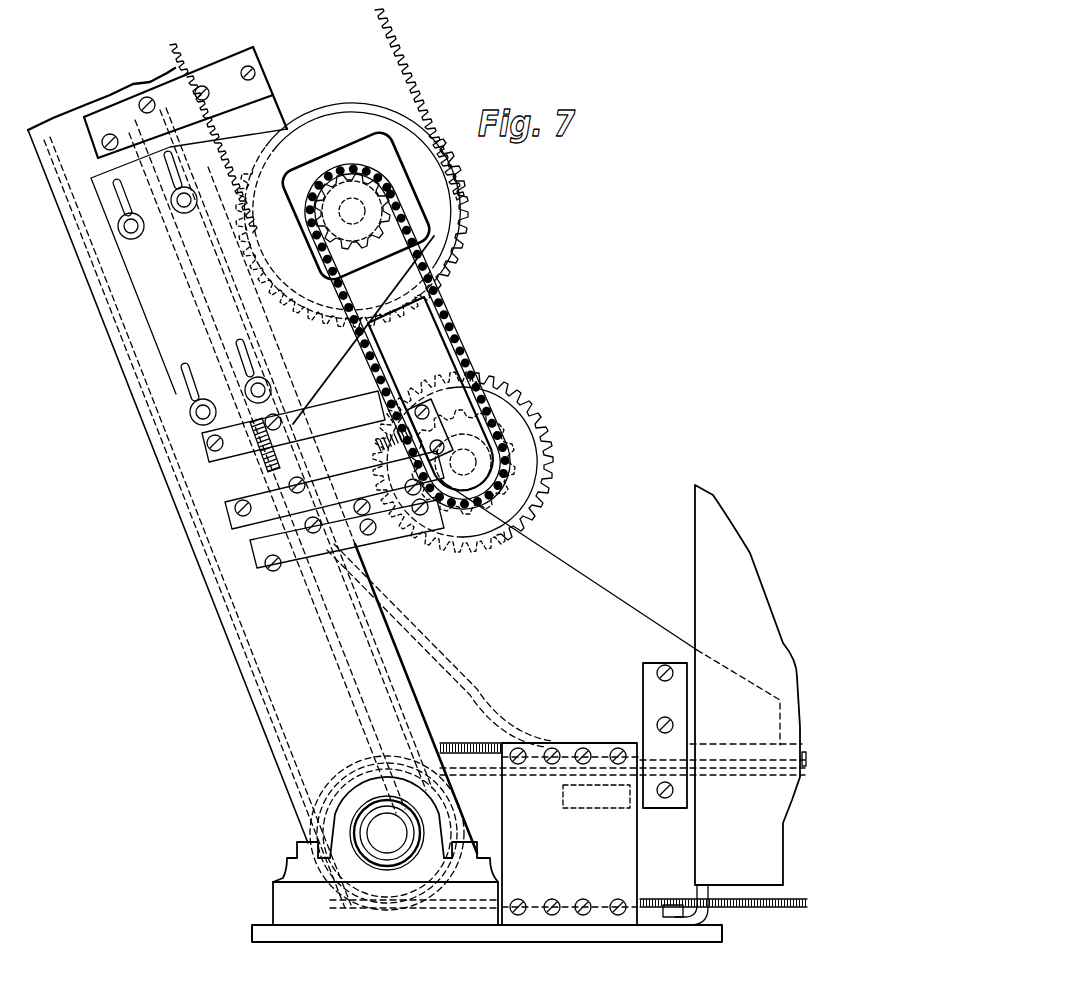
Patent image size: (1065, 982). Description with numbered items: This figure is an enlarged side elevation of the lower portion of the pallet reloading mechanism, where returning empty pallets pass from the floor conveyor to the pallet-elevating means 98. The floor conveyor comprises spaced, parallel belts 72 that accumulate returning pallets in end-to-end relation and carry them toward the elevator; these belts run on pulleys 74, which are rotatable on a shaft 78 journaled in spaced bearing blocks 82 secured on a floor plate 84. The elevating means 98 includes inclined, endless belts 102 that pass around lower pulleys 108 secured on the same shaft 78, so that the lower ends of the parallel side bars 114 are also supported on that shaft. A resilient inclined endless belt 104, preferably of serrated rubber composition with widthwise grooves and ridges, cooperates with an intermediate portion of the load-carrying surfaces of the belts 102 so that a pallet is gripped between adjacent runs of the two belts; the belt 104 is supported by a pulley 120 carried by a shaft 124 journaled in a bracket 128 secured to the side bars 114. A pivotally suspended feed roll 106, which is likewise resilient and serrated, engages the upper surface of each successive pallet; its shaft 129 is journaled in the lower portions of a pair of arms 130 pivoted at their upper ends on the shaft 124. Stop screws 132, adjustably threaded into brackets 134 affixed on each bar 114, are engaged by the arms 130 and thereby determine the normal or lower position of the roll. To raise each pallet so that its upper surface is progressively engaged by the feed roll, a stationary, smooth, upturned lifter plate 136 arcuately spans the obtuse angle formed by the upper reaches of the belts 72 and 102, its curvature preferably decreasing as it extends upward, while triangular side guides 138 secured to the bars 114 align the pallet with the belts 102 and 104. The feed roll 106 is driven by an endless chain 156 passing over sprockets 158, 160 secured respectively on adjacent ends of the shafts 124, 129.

The belts 72 is at (758, 910).
The pulleys 74 is at (453, 820).
The shaft 78 is at (378, 833).
The bearing blocks 82 is at (284, 869).
The floor plate 84 is at (252, 930).
The pallet-elevating means 98 is at (594, 327).
The inclined endless belts 102 is at (237, 628).
The resilient inclined endless belt 104 is at (465, 243).
The feed roll 106 is at (557, 461).
The lower pulleys 108 is at (347, 777).
The side bars 114 is at (168, 495).
The pulley 120 is at (345, 104).
The shaft 124 is at (365, 200).
The bracket 128 is at (273, 127).
The shaft 129 is at (477, 470).
The arms 130 is at (453, 350).
The stop screws 132 is at (383, 428).
The brackets 134 is at (348, 458).
The lifter plate 136 is at (480, 700).
The triangular side guides 138 is at (620, 602).
The endless chain 156 is at (447, 304).
The sprocket 158 is at (393, 235).
The sprocket 160 is at (470, 380).